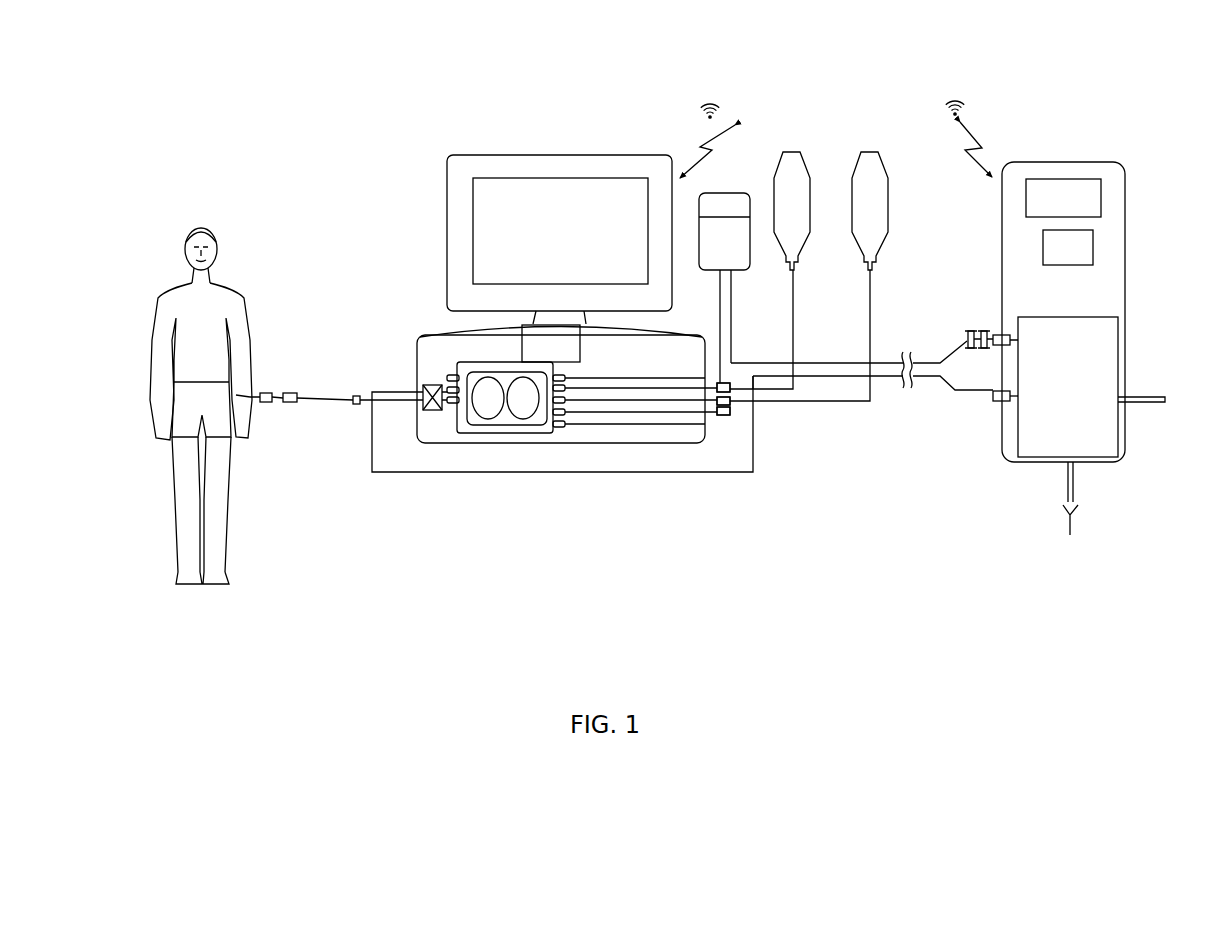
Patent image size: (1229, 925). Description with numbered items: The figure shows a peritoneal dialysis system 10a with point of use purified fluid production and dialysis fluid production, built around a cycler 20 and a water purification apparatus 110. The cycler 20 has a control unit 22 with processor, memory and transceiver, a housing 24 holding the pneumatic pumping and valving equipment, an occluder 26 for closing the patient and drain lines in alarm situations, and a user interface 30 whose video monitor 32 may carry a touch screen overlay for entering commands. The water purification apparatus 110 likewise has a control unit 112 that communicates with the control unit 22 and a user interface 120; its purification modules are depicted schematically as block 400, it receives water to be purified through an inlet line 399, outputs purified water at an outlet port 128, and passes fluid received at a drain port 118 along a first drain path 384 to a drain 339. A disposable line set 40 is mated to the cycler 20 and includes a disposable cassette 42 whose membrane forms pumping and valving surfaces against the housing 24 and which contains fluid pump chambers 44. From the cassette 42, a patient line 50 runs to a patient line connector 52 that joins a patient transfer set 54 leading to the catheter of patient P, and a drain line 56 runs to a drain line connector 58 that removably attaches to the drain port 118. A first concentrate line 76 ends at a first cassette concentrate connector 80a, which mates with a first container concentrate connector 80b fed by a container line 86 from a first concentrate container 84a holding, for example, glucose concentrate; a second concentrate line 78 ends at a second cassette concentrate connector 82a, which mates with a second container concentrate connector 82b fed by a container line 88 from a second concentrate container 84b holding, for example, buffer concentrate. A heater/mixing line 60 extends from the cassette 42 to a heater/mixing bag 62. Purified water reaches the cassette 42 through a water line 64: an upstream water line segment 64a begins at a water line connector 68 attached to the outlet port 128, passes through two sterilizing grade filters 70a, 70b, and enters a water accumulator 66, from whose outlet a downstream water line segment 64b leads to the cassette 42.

The patient P is at (202, 228).
The system 10a is at (607, 92).
The user interface 30 is at (447, 153).
The video monitor 32 is at (542, 238).
The cycler 20 is at (412, 337).
The heater/mixing bag 62 is at (425, 329).
The disposable line set 40 is at (357, 318).
The heater/mixing line 60 is at (413, 350).
The control unit 22 is at (538, 357).
The housing 24 is at (609, 357).
The patient transfer set 54 is at (265, 392).
The patient line connector 52 is at (291, 392).
The patient line 50 is at (322, 404).
The occluder 26 is at (437, 412).
The disposable cassette 42 is at (553, 434).
The fluid pump chambers 44 is at (467, 432).
The second concentrate line 78 is at (710, 432).
The first cassette concentrate connector 80a is at (794, 412).
The first container concentrate connector 80b is at (732, 389).
The second cassette concentrate connector 82a is at (789, 430).
The second container concentrate connector 82b is at (732, 413).
The drain line 56 is at (657, 473).
The water accumulator 66 is at (723, 191).
The downstream water line segment 64b is at (720, 352).
The water line 64 is at (772, 362).
The first concentrate line 76 is at (731, 353).
The container line 86 is at (796, 328).
The container line 88 is at (872, 330).
The upstream water line segment 64a is at (832, 363).
The first concentrate container 84a is at (791, 152).
The second concentrate container 84b is at (869, 152).
The outlet port 128 is at (998, 328).
The water line connector 68 is at (1000, 333).
The sterilizing grade filter 70a is at (972, 331).
The sterilizing grade filter 70b is at (968, 339).
The water purification apparatus 110 is at (1090, 161).
The user interface 120 is at (1025, 179).
The control unit 112 is at (1068, 247).
The purification modules 400 is at (1051, 348).
The drain line connector 58 is at (993, 402).
The drain port 118 is at (1008, 410).
The inlet line 399 is at (1145, 396).
The first drain path 384 is at (1075, 480).
The drain 339 is at (1072, 528).